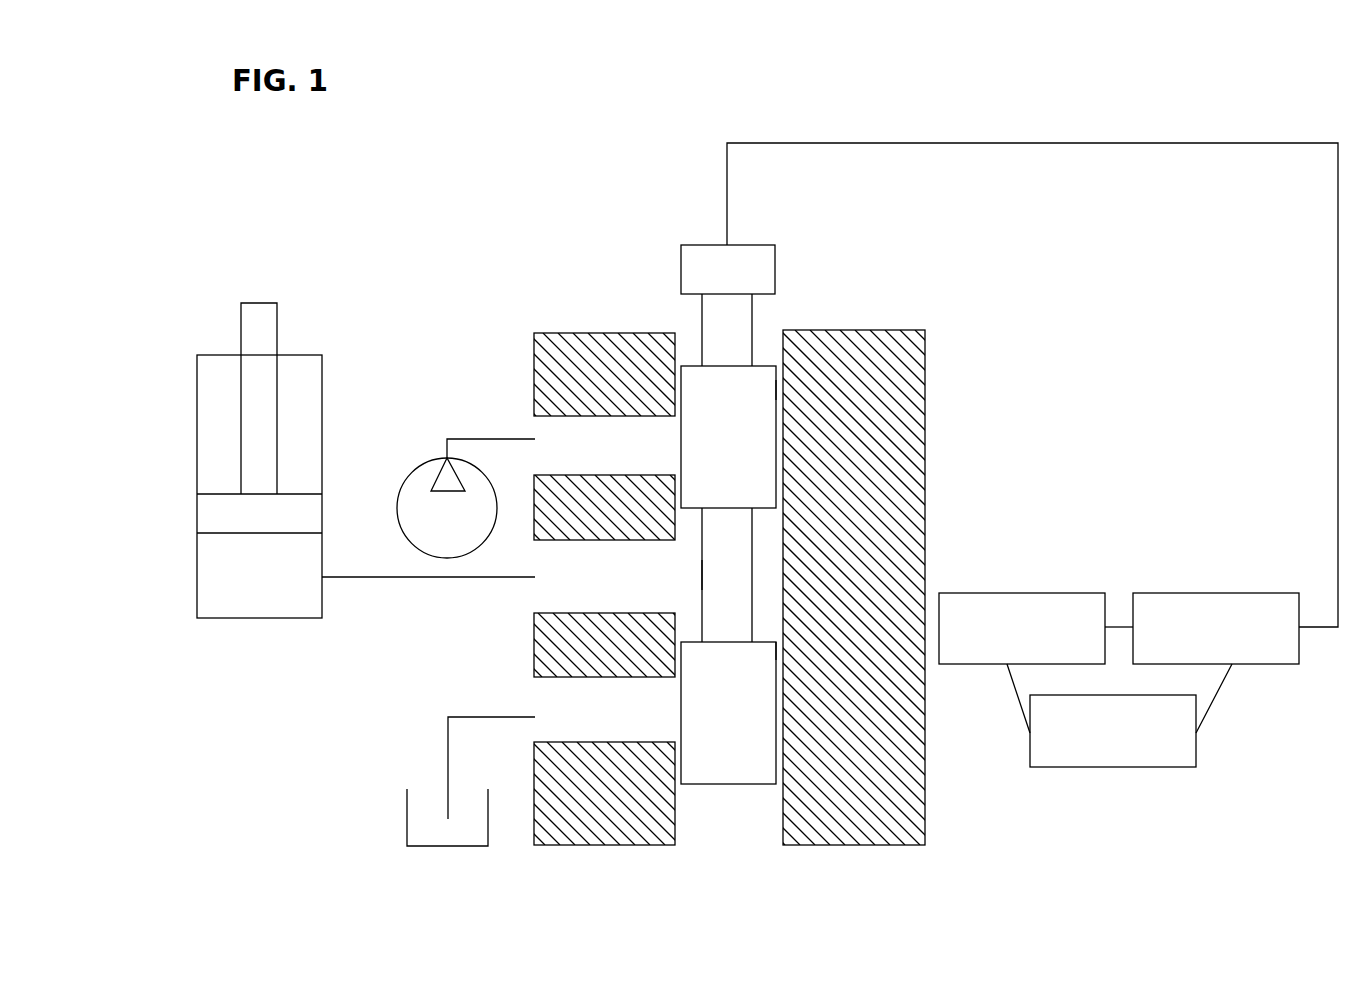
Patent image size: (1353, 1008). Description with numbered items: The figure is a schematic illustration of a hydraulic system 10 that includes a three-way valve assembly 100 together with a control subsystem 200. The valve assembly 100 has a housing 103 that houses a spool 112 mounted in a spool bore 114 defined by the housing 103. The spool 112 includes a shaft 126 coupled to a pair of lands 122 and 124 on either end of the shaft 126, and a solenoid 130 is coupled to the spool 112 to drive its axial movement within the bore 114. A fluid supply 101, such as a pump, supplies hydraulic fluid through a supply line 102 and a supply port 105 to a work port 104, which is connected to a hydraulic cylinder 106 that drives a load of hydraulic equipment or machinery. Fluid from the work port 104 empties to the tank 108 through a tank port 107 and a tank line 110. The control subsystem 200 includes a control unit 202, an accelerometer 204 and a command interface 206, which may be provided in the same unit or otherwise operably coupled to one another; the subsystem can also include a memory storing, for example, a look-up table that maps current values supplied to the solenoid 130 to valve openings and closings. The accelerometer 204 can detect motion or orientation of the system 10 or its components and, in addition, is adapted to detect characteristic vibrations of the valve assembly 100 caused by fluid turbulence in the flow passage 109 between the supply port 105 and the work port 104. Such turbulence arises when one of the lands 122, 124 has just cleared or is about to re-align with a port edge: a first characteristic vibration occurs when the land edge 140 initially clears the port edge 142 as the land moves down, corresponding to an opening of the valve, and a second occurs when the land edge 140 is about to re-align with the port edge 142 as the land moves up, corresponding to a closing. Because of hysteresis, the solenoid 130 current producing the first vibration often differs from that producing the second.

The hydraulic system 10 is at (1156, 82).
The three-way valve assembly 100 is at (944, 284).
The fluid supply 101 is at (410, 475).
The supply line 102 is at (562, 432).
The housing 103 is at (887, 407).
The work port 104 is at (540, 588).
The supply port 105 is at (670, 445).
The hydraulic cylinder 106 is at (322, 550).
The tank port 107 is at (533, 689).
The tank 108 is at (407, 808).
The flow passage 109 is at (765, 618).
The tank line 110 is at (600, 720).
The spool 112 is at (740, 553).
The spool bore 114 is at (765, 345).
The land 122 is at (765, 390).
The land 124 is at (733, 770).
The shaft 126 is at (723, 573).
The solenoid 130 is at (742, 263).
The land edge 140 is at (693, 366).
The port edge 142 is at (595, 412).
The control subsystem 200 is at (1146, 504).
The control unit 202 is at (1235, 593).
The accelerometer 204 is at (1062, 593).
The command interface 206 is at (1133, 769).